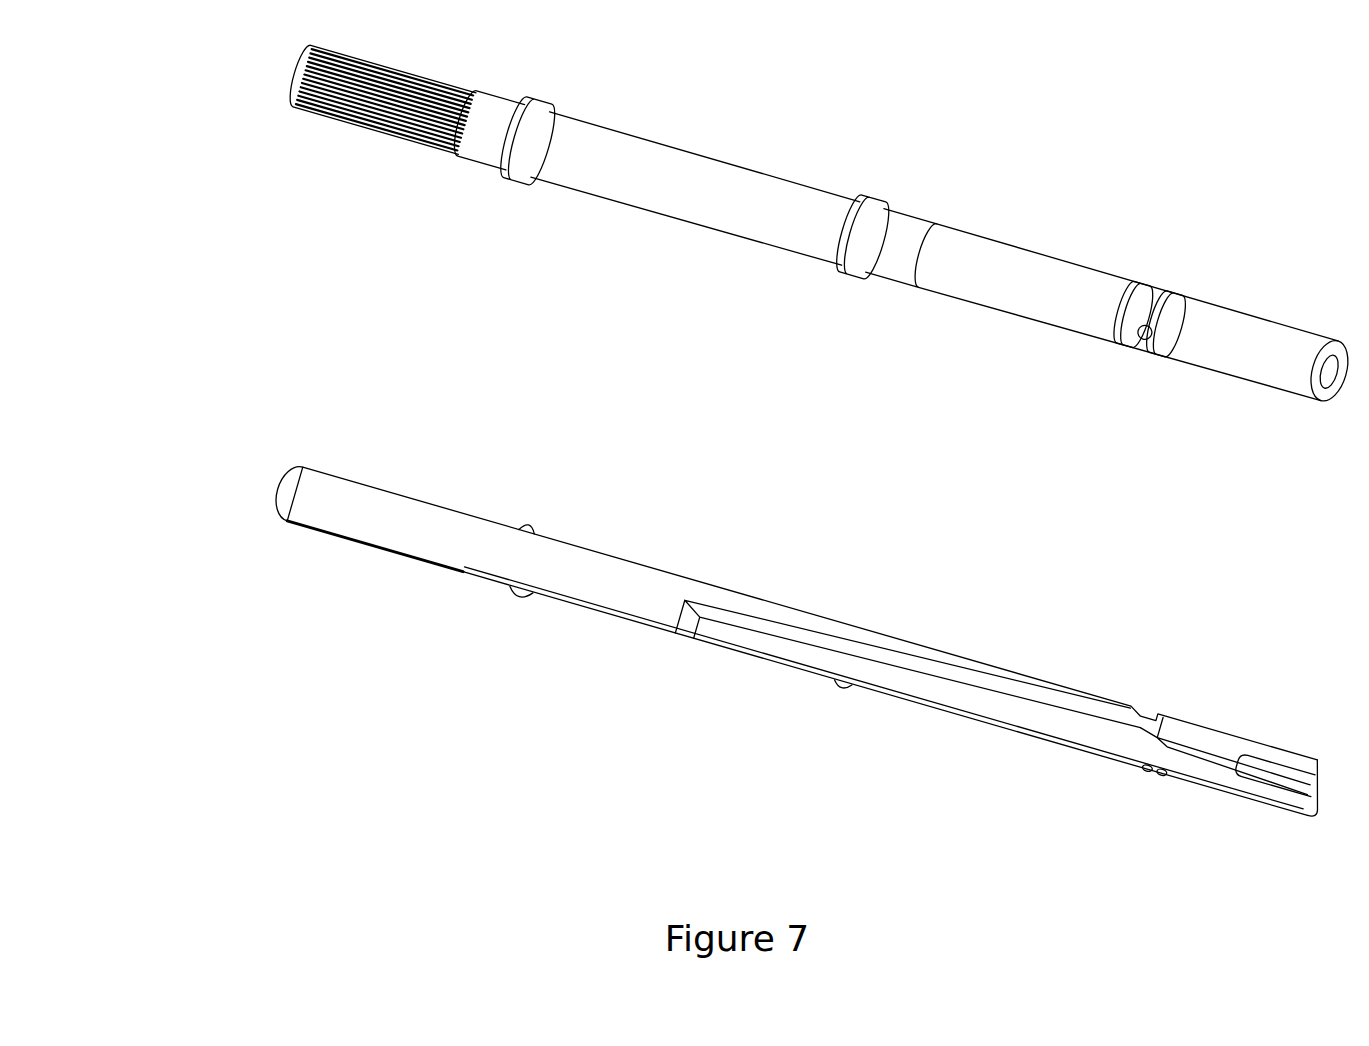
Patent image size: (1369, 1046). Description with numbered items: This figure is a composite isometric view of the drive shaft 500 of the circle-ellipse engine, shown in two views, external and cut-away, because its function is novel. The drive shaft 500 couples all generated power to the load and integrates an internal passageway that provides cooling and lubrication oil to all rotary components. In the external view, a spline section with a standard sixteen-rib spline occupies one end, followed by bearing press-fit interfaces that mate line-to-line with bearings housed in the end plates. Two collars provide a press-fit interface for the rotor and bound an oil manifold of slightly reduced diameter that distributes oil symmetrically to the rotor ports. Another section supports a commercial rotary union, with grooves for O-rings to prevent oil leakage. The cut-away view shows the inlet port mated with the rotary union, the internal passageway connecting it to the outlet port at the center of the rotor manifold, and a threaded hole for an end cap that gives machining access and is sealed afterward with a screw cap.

The drive shaft 500 is at (186, 83).